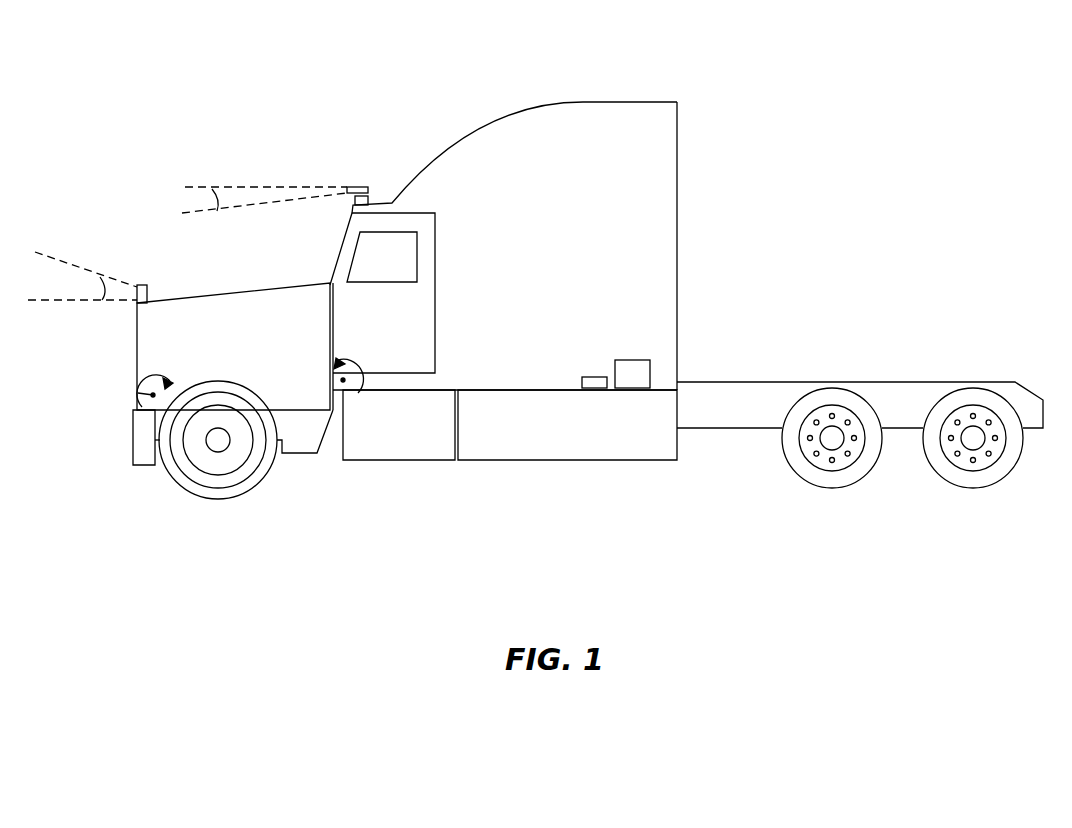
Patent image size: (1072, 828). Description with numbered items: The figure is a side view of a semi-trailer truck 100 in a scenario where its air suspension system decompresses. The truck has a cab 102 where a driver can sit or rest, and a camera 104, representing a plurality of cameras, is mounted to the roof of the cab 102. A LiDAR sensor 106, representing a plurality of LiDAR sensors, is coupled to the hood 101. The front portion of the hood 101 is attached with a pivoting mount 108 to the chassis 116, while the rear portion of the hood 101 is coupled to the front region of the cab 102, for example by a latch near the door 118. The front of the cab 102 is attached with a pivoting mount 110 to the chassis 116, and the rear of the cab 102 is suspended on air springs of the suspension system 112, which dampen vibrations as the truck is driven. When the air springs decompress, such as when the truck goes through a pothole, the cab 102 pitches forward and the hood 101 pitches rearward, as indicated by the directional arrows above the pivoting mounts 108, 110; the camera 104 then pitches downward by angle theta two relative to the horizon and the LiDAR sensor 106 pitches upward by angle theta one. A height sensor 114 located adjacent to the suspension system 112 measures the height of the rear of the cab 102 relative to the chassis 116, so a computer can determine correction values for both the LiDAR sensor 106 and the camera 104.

The semi-trailer truck 100 is at (978, 124).
The hood 101 is at (148, 330).
The cab 102 is at (677, 128).
The camera 104 is at (357, 187).
The LiDAR sensor 106 is at (140, 285).
The pivoting mount 108 is at (138, 393).
The pivoting mount 110 is at (342, 380).
The suspension system 112 is at (633, 360).
The height sensor 114 is at (591, 377).
The chassis 116 is at (735, 392).
The door 118 is at (422, 318).